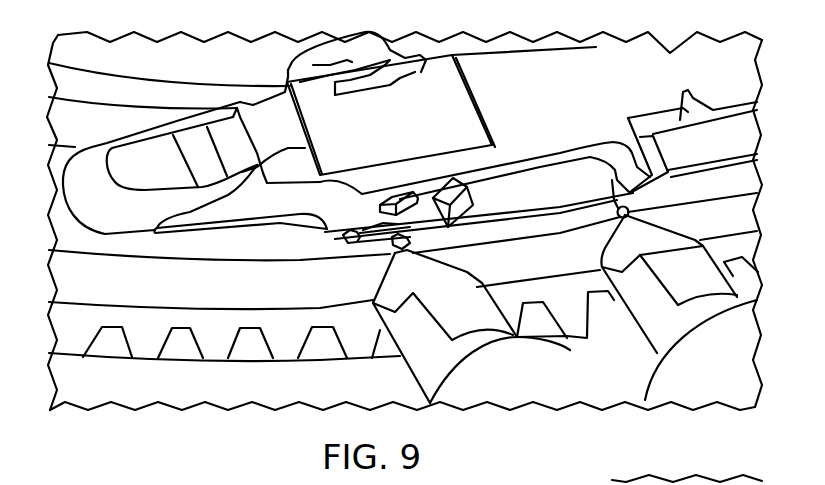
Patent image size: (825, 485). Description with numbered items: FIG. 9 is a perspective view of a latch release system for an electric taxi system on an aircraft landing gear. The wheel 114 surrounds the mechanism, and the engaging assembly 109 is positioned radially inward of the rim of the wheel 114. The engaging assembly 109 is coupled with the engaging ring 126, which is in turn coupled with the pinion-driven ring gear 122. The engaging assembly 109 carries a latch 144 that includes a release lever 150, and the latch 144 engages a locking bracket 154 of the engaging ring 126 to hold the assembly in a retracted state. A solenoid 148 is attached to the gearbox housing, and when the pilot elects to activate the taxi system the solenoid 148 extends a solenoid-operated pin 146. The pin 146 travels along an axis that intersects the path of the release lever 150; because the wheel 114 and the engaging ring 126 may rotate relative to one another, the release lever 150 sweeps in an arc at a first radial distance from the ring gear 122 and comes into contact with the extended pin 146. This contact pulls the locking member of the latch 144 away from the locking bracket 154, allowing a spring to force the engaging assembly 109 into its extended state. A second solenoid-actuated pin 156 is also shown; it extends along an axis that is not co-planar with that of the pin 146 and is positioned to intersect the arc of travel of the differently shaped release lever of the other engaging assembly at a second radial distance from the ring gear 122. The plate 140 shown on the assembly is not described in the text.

The engaging assembly 109 is at (253, 107).
The wheel 114 is at (257, 393).
The ring gear 122 is at (217, 352).
The engaging ring 126 is at (540, 228).
The plate 140 is at (274, 150).
The latch 144 is at (346, 240).
The solenoid-operated pin 146 is at (392, 250).
The solenoid 148 is at (525, 380).
The release lever 150 is at (406, 212).
The locking bracket 154 is at (629, 211).
The second solenoid-actuated pin 156 is at (750, 323).